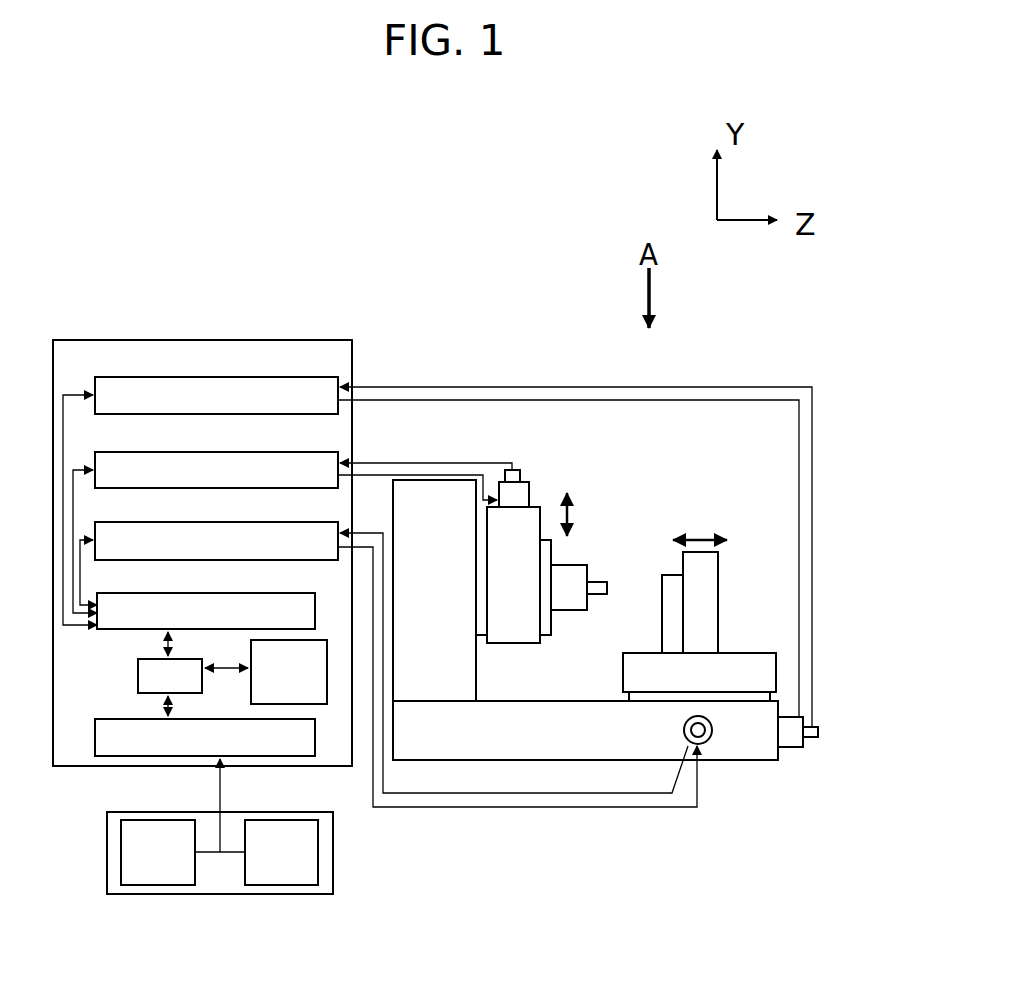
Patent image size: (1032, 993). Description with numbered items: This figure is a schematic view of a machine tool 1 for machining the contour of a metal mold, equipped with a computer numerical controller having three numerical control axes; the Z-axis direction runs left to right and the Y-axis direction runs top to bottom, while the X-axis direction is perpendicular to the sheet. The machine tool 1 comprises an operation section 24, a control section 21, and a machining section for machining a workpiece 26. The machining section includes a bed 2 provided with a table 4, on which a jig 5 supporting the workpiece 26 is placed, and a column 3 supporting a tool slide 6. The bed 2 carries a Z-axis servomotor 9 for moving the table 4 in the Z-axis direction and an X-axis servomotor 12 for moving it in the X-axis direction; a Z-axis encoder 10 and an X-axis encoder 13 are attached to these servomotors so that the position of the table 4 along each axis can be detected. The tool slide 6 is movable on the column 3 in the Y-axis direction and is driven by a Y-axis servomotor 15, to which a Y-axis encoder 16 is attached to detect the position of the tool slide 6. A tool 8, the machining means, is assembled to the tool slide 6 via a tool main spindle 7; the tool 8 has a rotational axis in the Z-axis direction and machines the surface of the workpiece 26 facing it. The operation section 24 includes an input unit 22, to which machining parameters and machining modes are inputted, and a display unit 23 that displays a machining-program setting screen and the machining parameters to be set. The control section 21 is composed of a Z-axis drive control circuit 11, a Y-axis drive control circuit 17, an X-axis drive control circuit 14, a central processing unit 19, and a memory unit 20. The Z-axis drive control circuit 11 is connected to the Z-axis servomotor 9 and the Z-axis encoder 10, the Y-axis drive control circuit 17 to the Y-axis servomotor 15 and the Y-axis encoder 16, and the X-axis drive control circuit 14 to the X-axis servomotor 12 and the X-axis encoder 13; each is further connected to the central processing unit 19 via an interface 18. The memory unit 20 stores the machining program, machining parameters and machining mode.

The machine tool 1 is at (567, 850).
The bed 2 is at (730, 750).
The column 3 is at (425, 498).
The table 4 is at (724, 662).
The jig 5 is at (705, 590).
The tool slide 6 is at (572, 481).
The tool main spindle 7 is at (568, 626).
The tool 8 is at (602, 593).
The Z-axis servomotor 9 is at (783, 740).
The Z-axis encoder 10 is at (815, 738).
The Z-axis drive control circuit 11 is at (240, 377).
The X-axis servomotor 12 is at (714, 727).
The X-axis encoder 13 is at (684, 727).
The X-axis drive control circuit 14 is at (240, 522).
The Y-axis servomotor 15 is at (532, 515).
The Y-axis encoder 16 is at (520, 473).
The Y-axis drive control circuit 17 is at (240, 452).
The interface 18 is at (240, 595).
The central processing unit 19 is at (153, 659).
The memory unit 20 is at (325, 643).
The control section 21 is at (118, 340).
The input unit 22 is at (155, 877).
The display unit 23 is at (278, 877).
The operation section 24 is at (256, 890).
The workpiece 26 is at (652, 587).